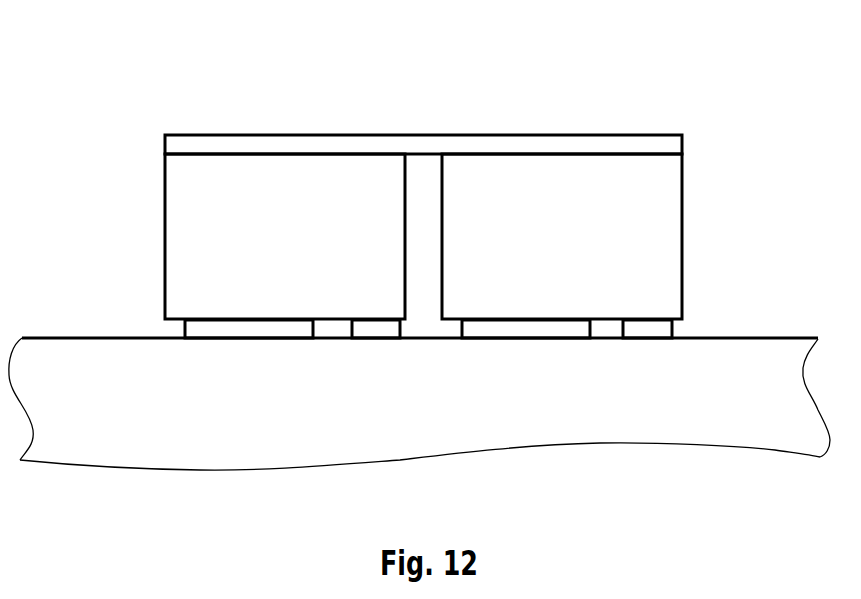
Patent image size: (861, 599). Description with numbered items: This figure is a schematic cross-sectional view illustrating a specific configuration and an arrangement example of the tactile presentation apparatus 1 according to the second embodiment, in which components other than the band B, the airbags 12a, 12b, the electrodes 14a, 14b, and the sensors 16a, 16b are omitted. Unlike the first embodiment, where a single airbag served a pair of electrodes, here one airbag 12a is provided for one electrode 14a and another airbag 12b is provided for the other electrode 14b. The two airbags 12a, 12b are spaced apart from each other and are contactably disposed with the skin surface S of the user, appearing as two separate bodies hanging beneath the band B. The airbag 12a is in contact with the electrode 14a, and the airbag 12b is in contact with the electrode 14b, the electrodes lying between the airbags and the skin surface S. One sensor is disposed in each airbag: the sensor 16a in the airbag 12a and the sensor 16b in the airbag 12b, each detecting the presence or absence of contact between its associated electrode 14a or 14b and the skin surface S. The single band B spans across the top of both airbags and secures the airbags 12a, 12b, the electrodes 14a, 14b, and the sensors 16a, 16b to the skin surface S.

The tactile presentation apparatus 1 is at (624, 77).
The band B is at (427, 147).
The airbag 12a is at (165, 243).
The airbag 12b is at (682, 248).
The electrode 14a is at (203, 335).
The sensor 16a is at (387, 333).
The electrode 14b is at (545, 332).
The sensor 16b is at (662, 335).
The skin surface S is at (780, 357).